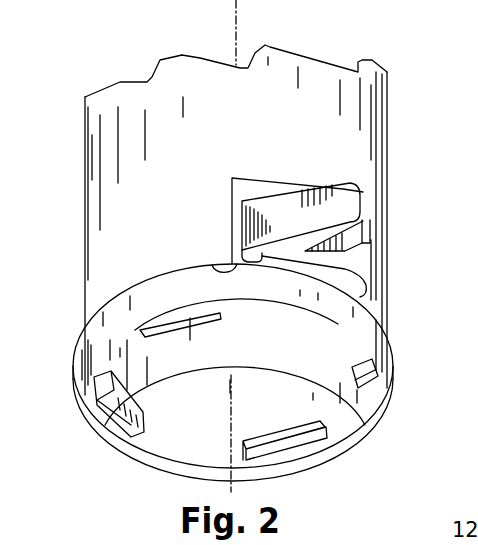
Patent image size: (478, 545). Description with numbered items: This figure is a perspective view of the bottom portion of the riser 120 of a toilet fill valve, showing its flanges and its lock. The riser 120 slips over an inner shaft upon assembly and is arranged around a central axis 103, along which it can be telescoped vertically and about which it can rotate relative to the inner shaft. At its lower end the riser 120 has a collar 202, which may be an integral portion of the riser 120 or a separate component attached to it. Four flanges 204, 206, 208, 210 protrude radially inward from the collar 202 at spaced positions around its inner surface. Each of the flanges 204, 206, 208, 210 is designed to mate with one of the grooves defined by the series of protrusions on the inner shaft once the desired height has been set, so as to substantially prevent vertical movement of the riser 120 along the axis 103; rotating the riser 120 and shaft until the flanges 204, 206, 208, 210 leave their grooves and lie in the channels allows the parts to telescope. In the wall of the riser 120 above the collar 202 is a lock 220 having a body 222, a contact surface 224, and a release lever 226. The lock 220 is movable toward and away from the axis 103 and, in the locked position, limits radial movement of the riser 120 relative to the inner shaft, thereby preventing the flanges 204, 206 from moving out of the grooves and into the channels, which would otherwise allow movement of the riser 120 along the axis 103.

The axis 103 is at (237, 27).
The riser 120 is at (145, 167).
The lock 220 is at (325, 173).
The release lever 226 is at (341, 207).
The contact surface 224 is at (215, 267).
The body 222 is at (348, 277).
The collar 202 is at (120, 304).
The flange 204 is at (185, 316).
The flange 206 is at (375, 381).
The flange 208 is at (300, 447).
The flange 210 is at (113, 418).